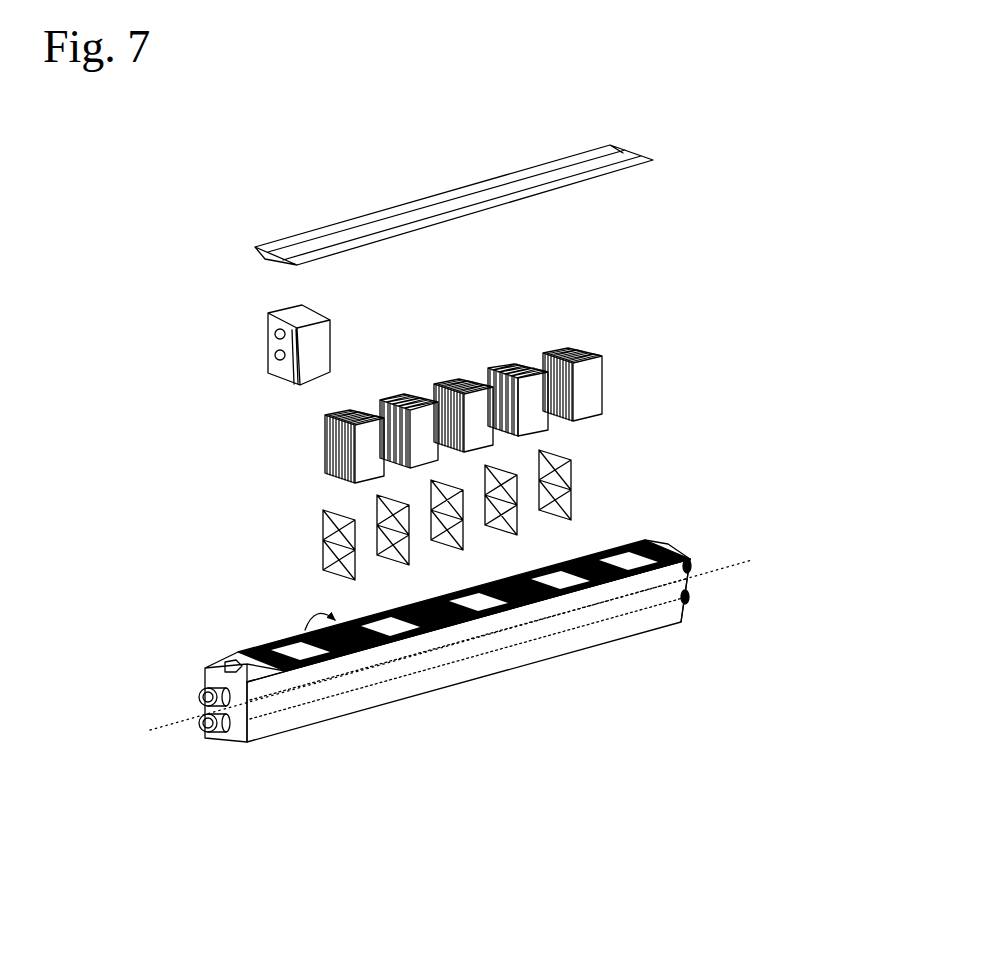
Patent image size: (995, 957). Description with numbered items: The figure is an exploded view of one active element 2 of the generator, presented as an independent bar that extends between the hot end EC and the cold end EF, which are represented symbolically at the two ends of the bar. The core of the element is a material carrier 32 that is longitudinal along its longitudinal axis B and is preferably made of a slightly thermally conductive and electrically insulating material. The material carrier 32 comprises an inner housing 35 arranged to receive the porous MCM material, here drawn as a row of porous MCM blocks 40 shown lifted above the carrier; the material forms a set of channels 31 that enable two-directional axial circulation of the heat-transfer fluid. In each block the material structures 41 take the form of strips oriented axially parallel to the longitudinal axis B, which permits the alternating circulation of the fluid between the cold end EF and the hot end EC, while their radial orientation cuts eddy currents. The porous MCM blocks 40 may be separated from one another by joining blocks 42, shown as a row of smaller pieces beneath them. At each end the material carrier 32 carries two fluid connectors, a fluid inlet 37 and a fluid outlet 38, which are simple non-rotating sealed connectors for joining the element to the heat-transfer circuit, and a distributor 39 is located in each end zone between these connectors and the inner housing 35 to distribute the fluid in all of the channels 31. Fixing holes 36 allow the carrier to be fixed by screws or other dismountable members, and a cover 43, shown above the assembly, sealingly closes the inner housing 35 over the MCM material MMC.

The active element 2 is at (203, 493).
The channels 31 is at (289, 645).
The material carrier 32 is at (298, 707).
The inner housing 35 is at (320, 667).
The fixing holes 36 is at (227, 662).
The fluid inlet 37 is at (200, 690).
The fluid outlet 38 is at (207, 730).
The distributor 39 is at (330, 337).
The porous MCM block 40 is at (521, 368).
The material structures 41 is at (330, 455).
The joining blocks 42 is at (323, 545).
The cover 43 is at (413, 203).
The MCM material MMC is at (582, 378).
The hot end EC is at (725, 542).
The cold end EF is at (136, 696).
The longitudinal axis B is at (462, 636).